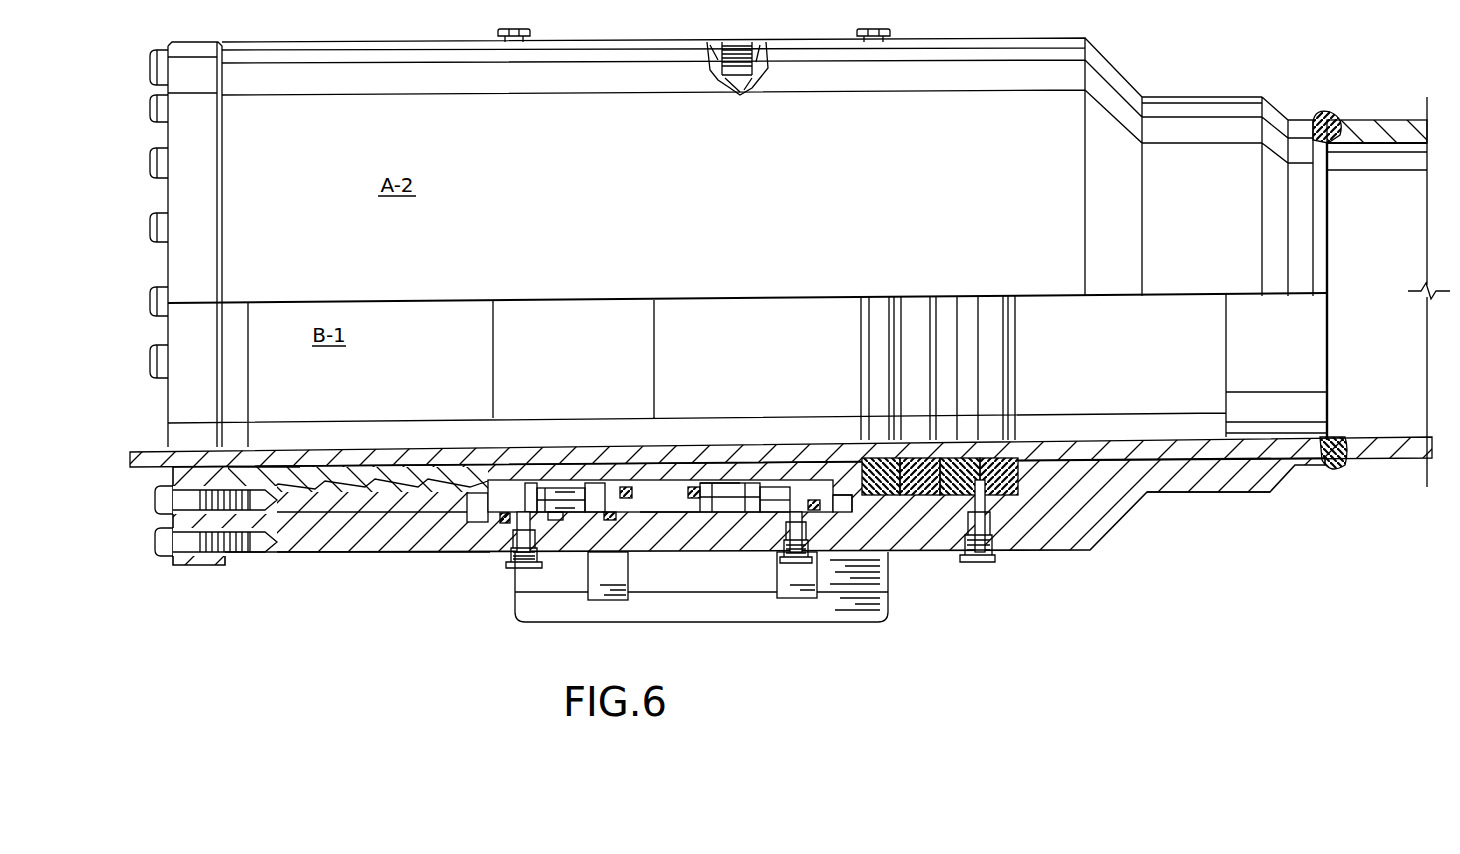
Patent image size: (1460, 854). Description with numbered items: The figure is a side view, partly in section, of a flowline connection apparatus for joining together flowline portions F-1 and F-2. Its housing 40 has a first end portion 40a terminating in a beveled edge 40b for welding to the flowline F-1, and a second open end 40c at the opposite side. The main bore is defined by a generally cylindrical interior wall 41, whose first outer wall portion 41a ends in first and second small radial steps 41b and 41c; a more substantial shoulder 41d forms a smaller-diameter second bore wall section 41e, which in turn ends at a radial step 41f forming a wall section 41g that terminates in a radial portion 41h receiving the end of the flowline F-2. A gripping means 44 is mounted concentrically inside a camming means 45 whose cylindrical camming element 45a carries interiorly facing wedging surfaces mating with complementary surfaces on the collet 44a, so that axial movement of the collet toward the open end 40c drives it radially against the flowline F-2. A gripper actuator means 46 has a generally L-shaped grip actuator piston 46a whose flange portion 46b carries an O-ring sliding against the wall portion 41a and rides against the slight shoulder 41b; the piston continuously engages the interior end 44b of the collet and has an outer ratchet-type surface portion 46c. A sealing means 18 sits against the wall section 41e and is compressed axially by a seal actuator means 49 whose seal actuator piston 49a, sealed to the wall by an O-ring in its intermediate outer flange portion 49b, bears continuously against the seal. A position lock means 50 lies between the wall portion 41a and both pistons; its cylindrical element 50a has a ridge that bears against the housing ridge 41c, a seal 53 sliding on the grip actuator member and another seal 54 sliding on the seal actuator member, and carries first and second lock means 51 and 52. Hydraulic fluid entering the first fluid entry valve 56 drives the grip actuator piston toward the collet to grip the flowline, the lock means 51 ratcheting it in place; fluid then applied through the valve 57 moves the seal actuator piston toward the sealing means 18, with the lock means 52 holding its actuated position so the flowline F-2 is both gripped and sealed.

The sealing means 18 is at (1000, 460).
The housing 40 is at (950, 206).
The first end portion 40a is at (1200, 125).
The beveled edge 40b is at (1333, 472).
The second open end 40c is at (188, 330).
The interior wall 41 is at (693, 339).
The first outer wall portion 41a is at (330, 528).
The first small radial step 41b is at (532, 521).
The second small radial step 41c is at (712, 556).
The radial step or shoulder 41d is at (842, 506).
The second cylindrical bore wall section 41e is at (950, 466).
The radial step or shoulder 41f is at (998, 495).
The wall section 41g is at (1108, 456).
The radial portion 41h is at (1232, 452).
The gripping means 44 is at (405, 478).
The collet 44a is at (318, 488).
The interior end of collet 44b is at (495, 476).
The camming means 45 is at (300, 522).
The camming element 45a is at (410, 517).
The gripper actuator means 46 is at (535, 492).
The grip actuator piston 46a is at (597, 490).
The flange portion 46b is at (475, 512).
The ratchet-type surface portion 46c is at (565, 483).
The seal actuator means 49 is at (752, 471).
The seal actuator piston 49a is at (720, 484).
The intermediate outer flange portion 49b is at (822, 492).
The position lock means 50 is at (715, 518).
The cylindrical element 50a is at (668, 522).
The first lock means 51 is at (560, 513).
The second lock means 52 is at (783, 488).
The seal 53 is at (630, 513).
The seal 54 is at (690, 481).
The first fluid entry valve 56 is at (525, 568).
The valve 57 is at (800, 563).
The flowline portion F-1 is at (1405, 128).
The flowline portion F-2 is at (158, 456).